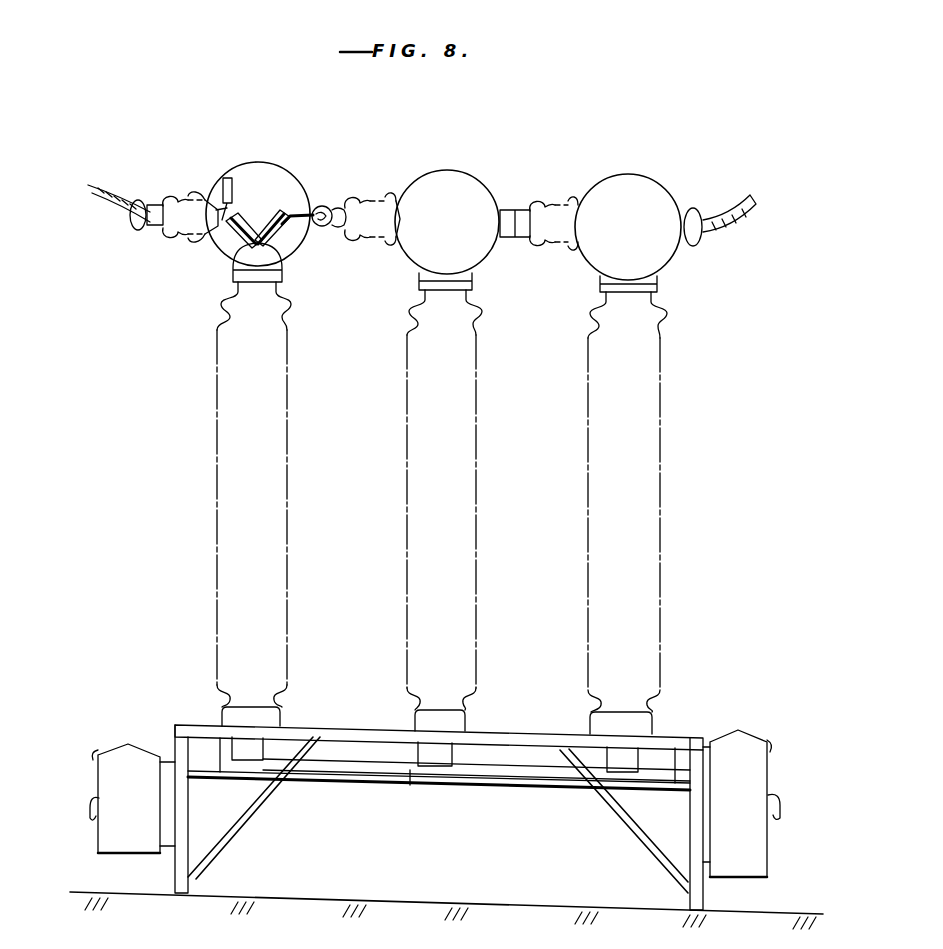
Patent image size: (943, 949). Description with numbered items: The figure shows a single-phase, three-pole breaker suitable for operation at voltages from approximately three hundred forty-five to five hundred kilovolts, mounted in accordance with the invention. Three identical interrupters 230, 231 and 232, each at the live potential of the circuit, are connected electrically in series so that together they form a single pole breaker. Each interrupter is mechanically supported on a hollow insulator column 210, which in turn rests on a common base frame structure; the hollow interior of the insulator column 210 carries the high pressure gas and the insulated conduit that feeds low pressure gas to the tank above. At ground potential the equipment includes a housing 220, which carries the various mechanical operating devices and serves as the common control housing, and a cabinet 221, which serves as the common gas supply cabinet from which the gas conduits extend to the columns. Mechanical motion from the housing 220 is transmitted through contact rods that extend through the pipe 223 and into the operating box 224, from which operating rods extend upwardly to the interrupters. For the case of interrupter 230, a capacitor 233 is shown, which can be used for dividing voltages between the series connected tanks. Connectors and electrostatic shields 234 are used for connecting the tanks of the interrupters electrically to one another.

The hollow insulator column 210 is at (287, 545).
The housing 220 is at (768, 850).
The cabinet 221 is at (107, 833).
The pipe 223 is at (528, 770).
The operating box 224 is at (250, 750).
The interrupter 230 is at (303, 130).
The interrupter 231 is at (490, 130).
The interrupter 232 is at (672, 136).
The capacitor 233 is at (221, 186).
The electrostatic shield 234 is at (318, 230).